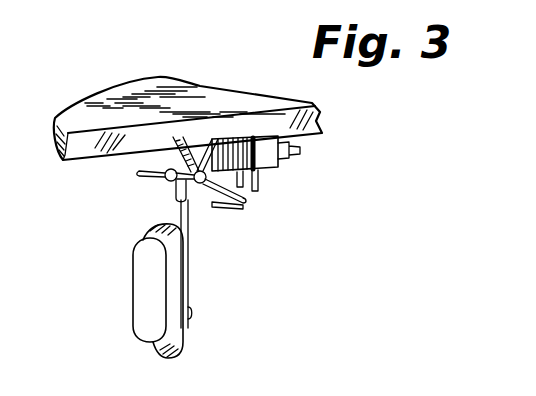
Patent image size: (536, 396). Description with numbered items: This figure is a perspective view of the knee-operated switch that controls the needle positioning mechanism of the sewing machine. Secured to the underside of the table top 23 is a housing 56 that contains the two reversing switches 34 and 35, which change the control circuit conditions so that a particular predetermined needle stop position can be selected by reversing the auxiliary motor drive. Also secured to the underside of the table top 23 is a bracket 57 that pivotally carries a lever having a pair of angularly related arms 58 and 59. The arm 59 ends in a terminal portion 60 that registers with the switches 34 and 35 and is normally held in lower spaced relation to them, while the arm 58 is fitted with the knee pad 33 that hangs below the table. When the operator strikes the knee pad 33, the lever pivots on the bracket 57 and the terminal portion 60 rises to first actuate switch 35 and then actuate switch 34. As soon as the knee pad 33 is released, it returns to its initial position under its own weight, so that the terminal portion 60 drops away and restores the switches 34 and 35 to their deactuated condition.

The table top 23 is at (128, 98).
The knee pad 33 is at (147, 279).
The reversing switch 34 is at (242, 188).
The reversing switch 35 is at (263, 181).
The housing 56 is at (257, 149).
The bracket 57 is at (213, 143).
The arm 58 is at (191, 266).
The arm 59 is at (199, 193).
The terminal portion 60 is at (238, 210).